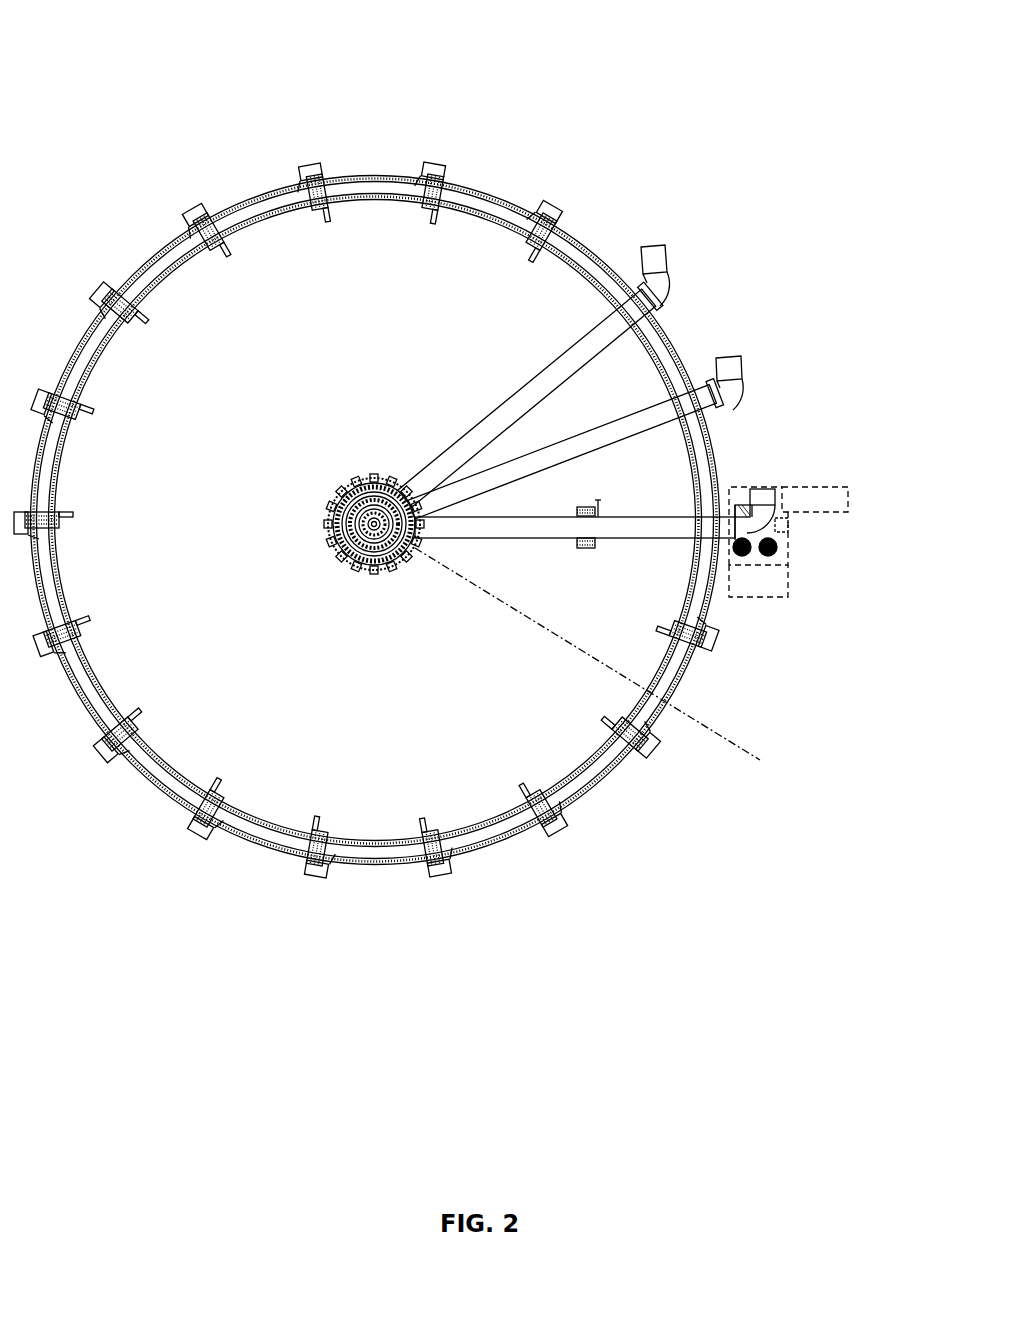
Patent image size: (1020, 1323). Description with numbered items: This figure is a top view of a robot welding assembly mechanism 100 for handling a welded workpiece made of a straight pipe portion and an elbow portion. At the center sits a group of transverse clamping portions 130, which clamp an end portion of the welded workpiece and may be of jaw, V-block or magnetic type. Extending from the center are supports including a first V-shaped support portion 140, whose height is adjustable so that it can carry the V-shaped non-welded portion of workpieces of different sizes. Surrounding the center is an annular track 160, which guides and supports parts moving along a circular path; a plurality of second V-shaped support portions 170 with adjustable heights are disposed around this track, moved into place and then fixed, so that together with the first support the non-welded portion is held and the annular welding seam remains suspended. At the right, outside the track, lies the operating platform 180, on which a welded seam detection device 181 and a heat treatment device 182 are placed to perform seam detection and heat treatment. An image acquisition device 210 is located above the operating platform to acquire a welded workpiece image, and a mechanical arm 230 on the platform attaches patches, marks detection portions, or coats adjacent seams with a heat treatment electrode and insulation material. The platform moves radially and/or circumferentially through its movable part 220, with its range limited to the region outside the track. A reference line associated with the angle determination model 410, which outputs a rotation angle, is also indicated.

The robot welding assembly mechanism 100 is at (166, 36).
The transverse clamping portions 130 is at (380, 470).
The first V-shaped support portion 140 is at (595, 546).
The annular track 160 is at (700, 850).
The second V-shaped support portions 170 is at (820, 452).
The operating platform 180 is at (810, 563).
The welded seam detection device 181 is at (742, 556).
The heat treatment device 182 is at (769, 556).
The image acquisition device 210 is at (813, 540).
The movable part 220 is at (810, 598).
The mechanical arm 230 is at (840, 492).
The angle determination model 410 is at (760, 760).